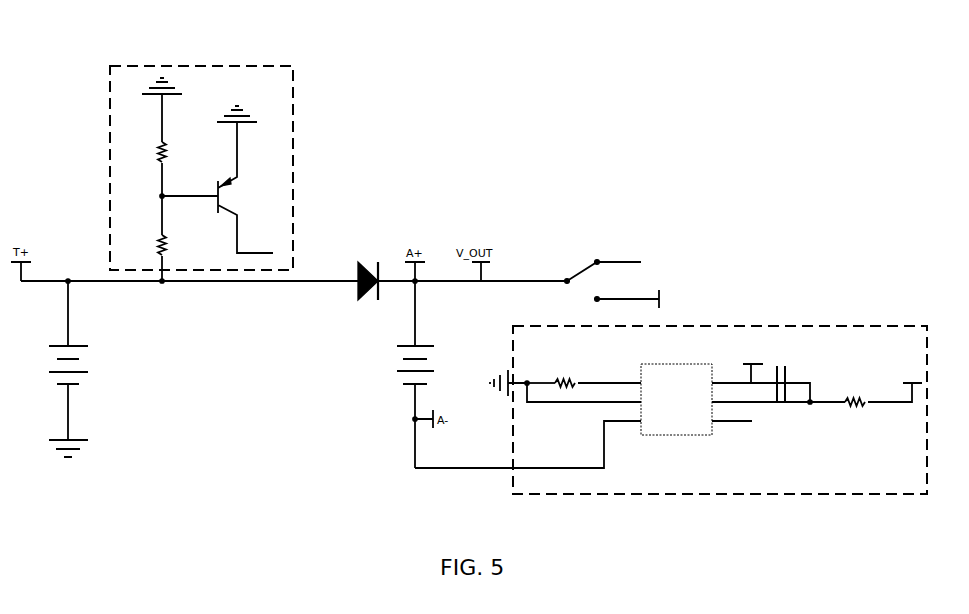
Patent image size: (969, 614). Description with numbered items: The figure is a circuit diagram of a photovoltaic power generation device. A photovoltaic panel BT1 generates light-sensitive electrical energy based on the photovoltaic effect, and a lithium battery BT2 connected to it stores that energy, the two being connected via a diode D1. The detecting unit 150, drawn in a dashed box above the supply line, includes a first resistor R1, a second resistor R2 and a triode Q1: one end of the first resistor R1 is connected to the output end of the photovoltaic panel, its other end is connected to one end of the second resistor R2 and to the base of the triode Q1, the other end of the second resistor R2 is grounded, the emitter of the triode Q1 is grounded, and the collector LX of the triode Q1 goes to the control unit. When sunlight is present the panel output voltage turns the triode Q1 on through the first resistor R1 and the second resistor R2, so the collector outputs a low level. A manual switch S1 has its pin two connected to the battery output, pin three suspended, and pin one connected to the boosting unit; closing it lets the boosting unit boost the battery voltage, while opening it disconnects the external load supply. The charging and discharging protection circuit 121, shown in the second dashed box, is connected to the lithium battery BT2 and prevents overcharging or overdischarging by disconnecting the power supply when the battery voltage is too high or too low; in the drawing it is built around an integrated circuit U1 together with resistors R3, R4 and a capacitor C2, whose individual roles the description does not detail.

The detecting unit 150 is at (219, 145).
The charging and discharging protection circuit 121 is at (708, 371).
The photovoltaic panel BT1 is at (81, 369).
The lithium battery BT2 is at (428, 374).
The diode D1 is at (349, 281).
The manual switch S1 is at (615, 276).
The first resistor R1 is at (172, 246).
The second resistor R2 is at (172, 152).
The resistor R3 is at (551, 377).
The resistor R4 is at (841, 396).
The triode Q1 is at (239, 195).
The integrated circuit U1 is at (676, 392).
The capacitor C2 is at (770, 384).